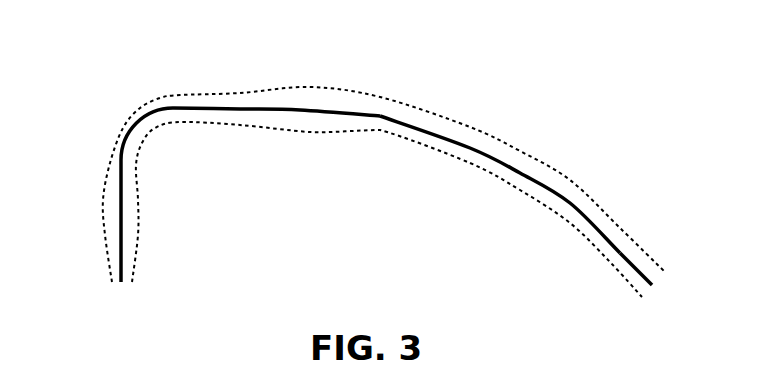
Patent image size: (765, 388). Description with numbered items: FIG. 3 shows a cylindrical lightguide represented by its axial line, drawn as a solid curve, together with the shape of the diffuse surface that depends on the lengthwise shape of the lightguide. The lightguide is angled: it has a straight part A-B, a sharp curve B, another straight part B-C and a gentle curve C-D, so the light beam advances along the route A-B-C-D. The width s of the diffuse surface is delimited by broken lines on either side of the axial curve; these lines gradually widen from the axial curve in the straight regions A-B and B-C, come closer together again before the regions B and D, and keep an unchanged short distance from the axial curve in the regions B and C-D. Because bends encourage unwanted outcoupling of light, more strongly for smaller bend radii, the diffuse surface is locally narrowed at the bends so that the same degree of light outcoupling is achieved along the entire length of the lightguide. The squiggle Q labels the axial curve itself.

The start point of straight part A-B A is at (182, 282).
The sharp curve B is at (185, 172).
The end point of straight part B- C is at (308, 168).
The end point of gentle curve C- D is at (578, 287).
The width of the diffuse surface s is at (226, 160).
The free end of the wire form Q is at (650, 270).